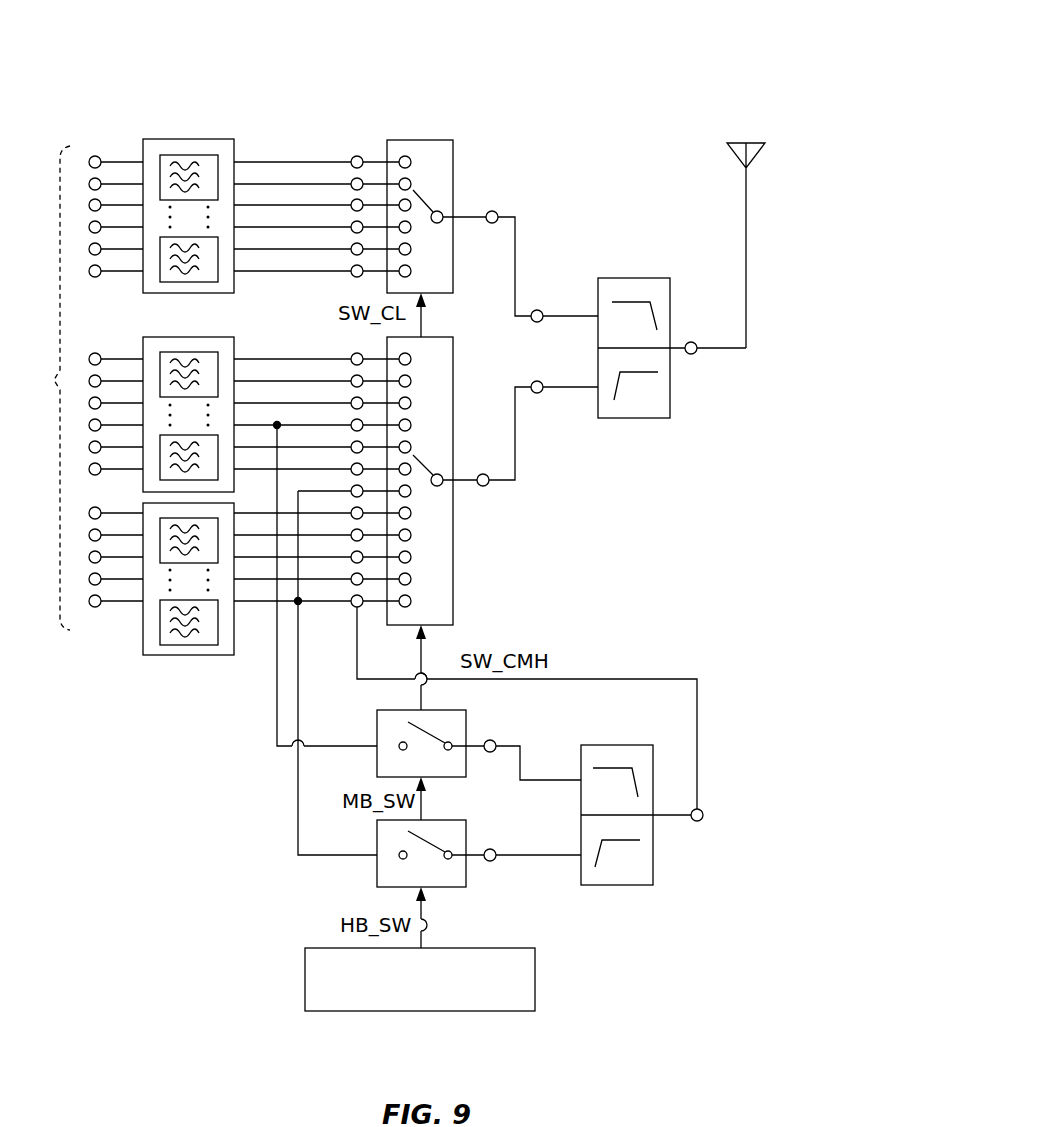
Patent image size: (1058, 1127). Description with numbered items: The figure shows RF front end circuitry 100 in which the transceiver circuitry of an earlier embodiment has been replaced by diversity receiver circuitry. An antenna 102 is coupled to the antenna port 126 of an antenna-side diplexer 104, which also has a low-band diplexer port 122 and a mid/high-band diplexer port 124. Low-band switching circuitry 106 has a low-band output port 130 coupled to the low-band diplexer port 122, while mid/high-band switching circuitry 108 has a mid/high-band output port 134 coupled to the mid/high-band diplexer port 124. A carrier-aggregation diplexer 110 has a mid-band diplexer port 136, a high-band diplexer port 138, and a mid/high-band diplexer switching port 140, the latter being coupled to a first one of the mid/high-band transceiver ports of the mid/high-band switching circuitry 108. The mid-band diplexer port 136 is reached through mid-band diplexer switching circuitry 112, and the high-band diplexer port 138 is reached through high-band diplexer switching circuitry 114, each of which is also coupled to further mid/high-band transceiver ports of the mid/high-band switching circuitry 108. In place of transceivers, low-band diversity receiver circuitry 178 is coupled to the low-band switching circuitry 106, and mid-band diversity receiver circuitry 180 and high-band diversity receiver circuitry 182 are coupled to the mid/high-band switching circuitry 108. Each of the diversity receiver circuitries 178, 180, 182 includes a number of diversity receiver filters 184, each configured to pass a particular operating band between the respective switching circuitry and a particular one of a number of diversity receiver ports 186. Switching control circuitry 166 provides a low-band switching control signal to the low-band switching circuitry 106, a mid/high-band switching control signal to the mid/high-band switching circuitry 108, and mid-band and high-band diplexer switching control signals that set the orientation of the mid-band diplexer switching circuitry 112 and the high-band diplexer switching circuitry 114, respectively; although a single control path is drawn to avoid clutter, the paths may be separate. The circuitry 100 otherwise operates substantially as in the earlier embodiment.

The RF front end circuitry 100 is at (606, 51).
The antenna 102 is at (767, 142).
The antenna-side diplexer 104 is at (640, 418).
The low-band switching circuitry 106 is at (428, 140).
The mid/high-band switching circuitry 108 is at (430, 337).
The carrier-aggregation diplexer 110 is at (632, 885).
The mid-band diplexer switching circuitry 112 is at (467, 725).
The high-band diplexer switching circuitry 114 is at (467, 836).
The low-band diplexer port 122 is at (539, 309).
The mid/high-band diplexer port 124 is at (539, 394).
The antenna port 126 is at (693, 341).
The low-band output port 130 is at (495, 210).
The mid/high-band output port 134 is at (485, 487).
The mid-band diplexer port 136 is at (490, 752).
The high-band diplexer port 138 is at (490, 861).
The mid/high-band diplexer switching port 140 is at (697, 821).
The switching control circuitry 166 is at (420, 979).
The low-band diversity receiver circuitry 178 is at (195, 139).
The mid-band diversity receiver circuitry 180 is at (195, 337).
The high-band diversity receiver circuitry 182 is at (178, 597).
The diversity receiver filter 184 is at (160, 636).
The diversity receiver ports 186 is at (59, 388).